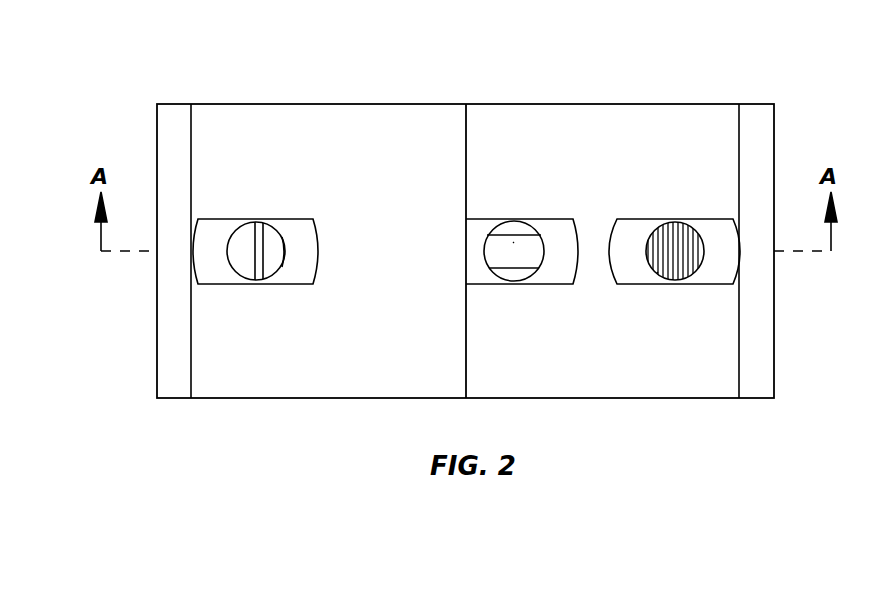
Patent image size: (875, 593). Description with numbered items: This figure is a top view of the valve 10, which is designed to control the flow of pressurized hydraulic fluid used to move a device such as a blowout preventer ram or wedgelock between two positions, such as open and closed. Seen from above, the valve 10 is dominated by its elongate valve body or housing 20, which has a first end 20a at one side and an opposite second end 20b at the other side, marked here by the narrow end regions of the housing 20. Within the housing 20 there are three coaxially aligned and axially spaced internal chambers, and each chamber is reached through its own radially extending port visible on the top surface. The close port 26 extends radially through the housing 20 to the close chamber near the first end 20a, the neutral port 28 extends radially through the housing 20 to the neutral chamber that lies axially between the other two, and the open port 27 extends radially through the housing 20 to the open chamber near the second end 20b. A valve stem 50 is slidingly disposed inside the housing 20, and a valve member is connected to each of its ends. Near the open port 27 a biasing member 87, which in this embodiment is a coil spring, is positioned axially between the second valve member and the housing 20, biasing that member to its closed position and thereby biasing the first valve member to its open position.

The valve 10 is at (644, 46).
The housing 20 is at (682, 112).
The first end 20a is at (167, 142).
The second end 20b is at (760, 142).
The close port 26 is at (240, 225).
The open port 27 is at (657, 272).
The neutral port 28 is at (528, 275).
The valve stem 50 is at (513, 242).
The biasing member 87 is at (675, 222).